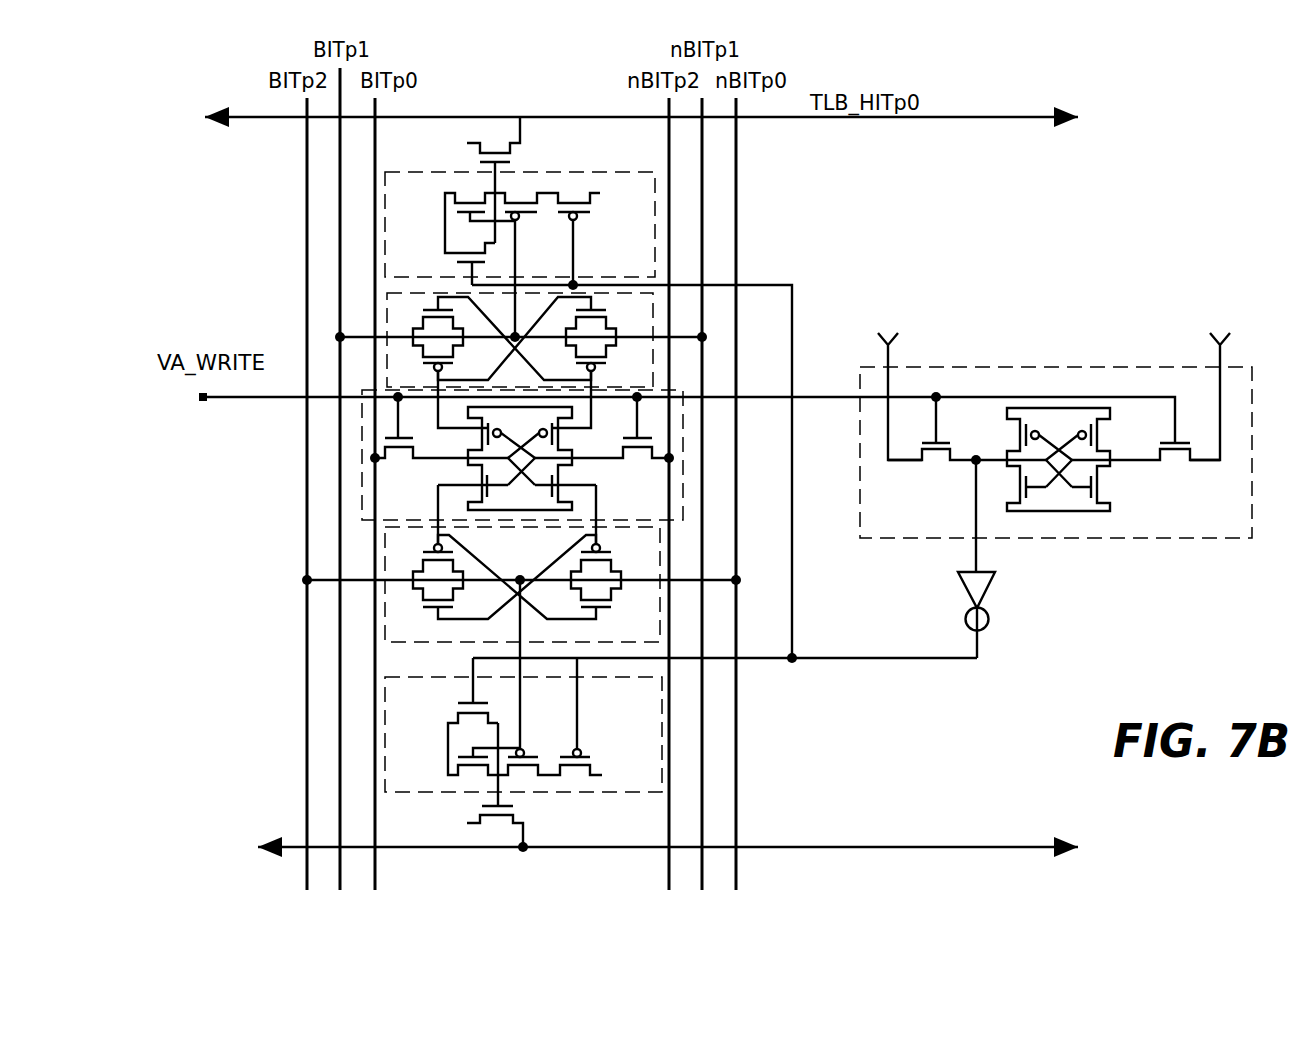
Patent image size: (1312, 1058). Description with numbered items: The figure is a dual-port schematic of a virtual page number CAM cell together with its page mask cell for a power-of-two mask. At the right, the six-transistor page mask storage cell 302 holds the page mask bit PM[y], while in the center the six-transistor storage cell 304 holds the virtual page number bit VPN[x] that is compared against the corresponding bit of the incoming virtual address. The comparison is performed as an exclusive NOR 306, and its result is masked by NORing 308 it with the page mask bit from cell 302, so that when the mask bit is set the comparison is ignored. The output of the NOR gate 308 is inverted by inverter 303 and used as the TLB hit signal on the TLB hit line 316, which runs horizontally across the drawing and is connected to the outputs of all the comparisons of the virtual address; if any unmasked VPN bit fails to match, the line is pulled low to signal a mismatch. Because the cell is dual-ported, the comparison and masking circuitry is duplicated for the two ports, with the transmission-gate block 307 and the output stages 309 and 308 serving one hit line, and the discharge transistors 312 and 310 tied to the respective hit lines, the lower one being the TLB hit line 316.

The page mask cell 302 is at (1017, 367).
The inverter 303 is at (988, 590).
The virtual page number bit storage cell 304 is at (362, 456).
The exclusive NOR 306 is at (385, 561).
The transmission gate pair (BITp1/nBITp1 selection) 307 is at (387, 318).
The NOR gate 308 is at (385, 716).
The pull-down/pull-up output stage for TLB_HITp0 309 is at (387, 217).
The discharge transistor N9 for TLB_HITp1 line 310 is at (520, 818).
The discharge transistor N10 for TLB_HITp0 line 312 is at (515, 152).
The TLB hit line 316 is at (748, 847).